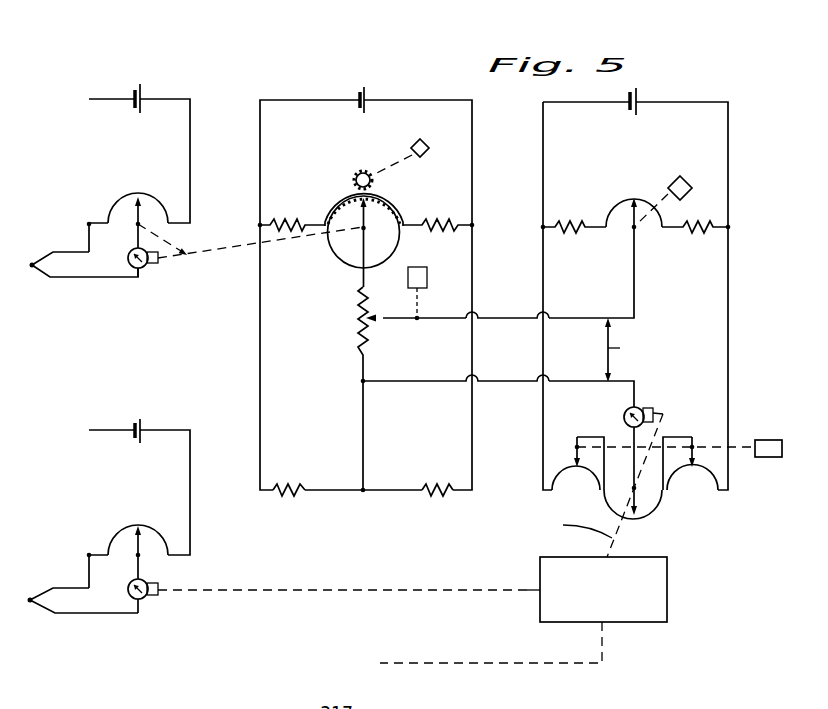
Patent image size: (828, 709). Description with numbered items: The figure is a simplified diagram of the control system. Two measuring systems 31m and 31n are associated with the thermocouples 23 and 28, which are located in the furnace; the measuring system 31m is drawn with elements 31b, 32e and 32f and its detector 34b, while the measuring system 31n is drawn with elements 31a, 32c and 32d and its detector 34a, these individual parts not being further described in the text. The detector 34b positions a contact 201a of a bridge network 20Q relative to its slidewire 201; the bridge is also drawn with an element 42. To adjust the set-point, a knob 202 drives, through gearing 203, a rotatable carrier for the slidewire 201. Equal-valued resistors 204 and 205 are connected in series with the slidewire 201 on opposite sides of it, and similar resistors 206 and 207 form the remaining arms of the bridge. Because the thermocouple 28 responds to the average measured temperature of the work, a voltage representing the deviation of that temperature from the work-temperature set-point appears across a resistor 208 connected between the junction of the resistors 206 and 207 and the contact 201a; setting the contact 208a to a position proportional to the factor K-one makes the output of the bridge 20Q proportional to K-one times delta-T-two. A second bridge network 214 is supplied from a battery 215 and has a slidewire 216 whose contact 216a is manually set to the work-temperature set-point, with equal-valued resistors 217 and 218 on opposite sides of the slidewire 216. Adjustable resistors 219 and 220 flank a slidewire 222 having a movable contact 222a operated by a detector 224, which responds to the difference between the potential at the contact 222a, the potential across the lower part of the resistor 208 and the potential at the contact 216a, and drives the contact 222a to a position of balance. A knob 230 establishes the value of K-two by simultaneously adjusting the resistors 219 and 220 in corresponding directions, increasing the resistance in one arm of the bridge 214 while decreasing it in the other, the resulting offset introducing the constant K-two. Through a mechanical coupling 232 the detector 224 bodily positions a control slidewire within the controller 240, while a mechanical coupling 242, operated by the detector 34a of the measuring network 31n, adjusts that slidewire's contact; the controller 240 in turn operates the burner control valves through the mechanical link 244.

The battery 31b is at (135, 85).
The measuring system 31m is at (163, 156).
The potentiometer 32e is at (160, 202).
The potentiometer wiper 32f is at (138, 224).
The thermocouple 28 is at (46, 252).
The detector 34b is at (143, 265).
The battery 31a is at (133, 422).
The measuring system 31n is at (138, 492).
The potentiometer wiper 32d is at (138, 553).
The potentiometer 32c is at (165, 517).
The thermocouple 23 is at (44, 593).
The detector 34a is at (143, 598).
The battery 42 is at (359, 90).
The knob 202 is at (422, 142).
The gearing 203 is at (366, 170).
The slidewire 201 is at (340, 203).
The resistor 204 is at (287, 220).
The contact 201a is at (367, 226).
The resistor 205 is at (442, 225).
The resistor 208 is at (360, 309).
The contact 208a is at (398, 318).
The bridge network 20Q is at (340, 357).
The resistor 206 is at (287, 487).
The resistor 207 is at (433, 487).
The adjustable resistor 219 is at (456, 382).
The battery 215 is at (637, 95).
The slidewire 216 is at (644, 207).
The contact 216a is at (624, 216).
The resistor 218 is at (693, 225).
The resistor 217 is at (572, 233).
The second bridge network 214 is at (703, 403).
The detector 224 is at (623, 412).
The knob 230 is at (767, 440).
The mechanical coupling 232 is at (623, 520).
The slidewire 222 is at (637, 522).
The movable contact 222a is at (637, 498).
The adjustable resistor 220 is at (707, 480).
The controller 240 is at (622, 610).
The mechanical coupling 242 is at (362, 592).
The mechanical link 244 is at (520, 665).